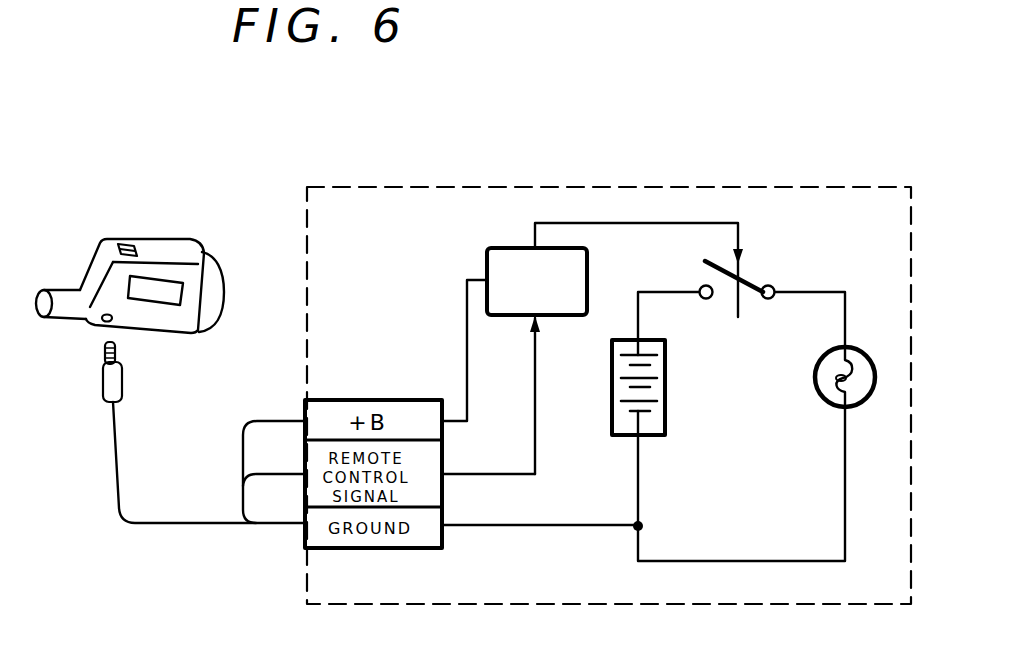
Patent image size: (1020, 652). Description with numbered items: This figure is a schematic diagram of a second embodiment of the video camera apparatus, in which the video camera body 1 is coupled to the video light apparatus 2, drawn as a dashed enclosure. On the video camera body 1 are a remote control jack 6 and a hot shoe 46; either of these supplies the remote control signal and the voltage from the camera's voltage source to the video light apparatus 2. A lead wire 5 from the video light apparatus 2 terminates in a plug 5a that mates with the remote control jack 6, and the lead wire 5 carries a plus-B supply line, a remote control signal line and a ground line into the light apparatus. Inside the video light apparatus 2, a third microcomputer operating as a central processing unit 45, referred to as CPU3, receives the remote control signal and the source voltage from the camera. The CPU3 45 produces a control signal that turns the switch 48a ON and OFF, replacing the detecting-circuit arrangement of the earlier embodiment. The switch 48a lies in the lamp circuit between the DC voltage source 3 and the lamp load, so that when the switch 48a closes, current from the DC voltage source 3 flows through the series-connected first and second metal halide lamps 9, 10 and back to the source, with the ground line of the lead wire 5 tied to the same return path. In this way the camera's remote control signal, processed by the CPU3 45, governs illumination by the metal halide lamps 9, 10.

The video camera body 1 is at (175, 330).
The video light apparatus 2 is at (583, 186).
The DC voltage source 3 is at (667, 410).
The lead wire 5 is at (182, 522).
The plug 5a is at (123, 388).
The remote control jack 6 is at (100, 330).
The first metal halide lamp 9 is at (812, 390).
The second metal halide lamp 10 is at (817, 368).
The central processing unit 45 is at (495, 247).
The hot shoe 46 is at (125, 243).
The switch 48a is at (655, 288).